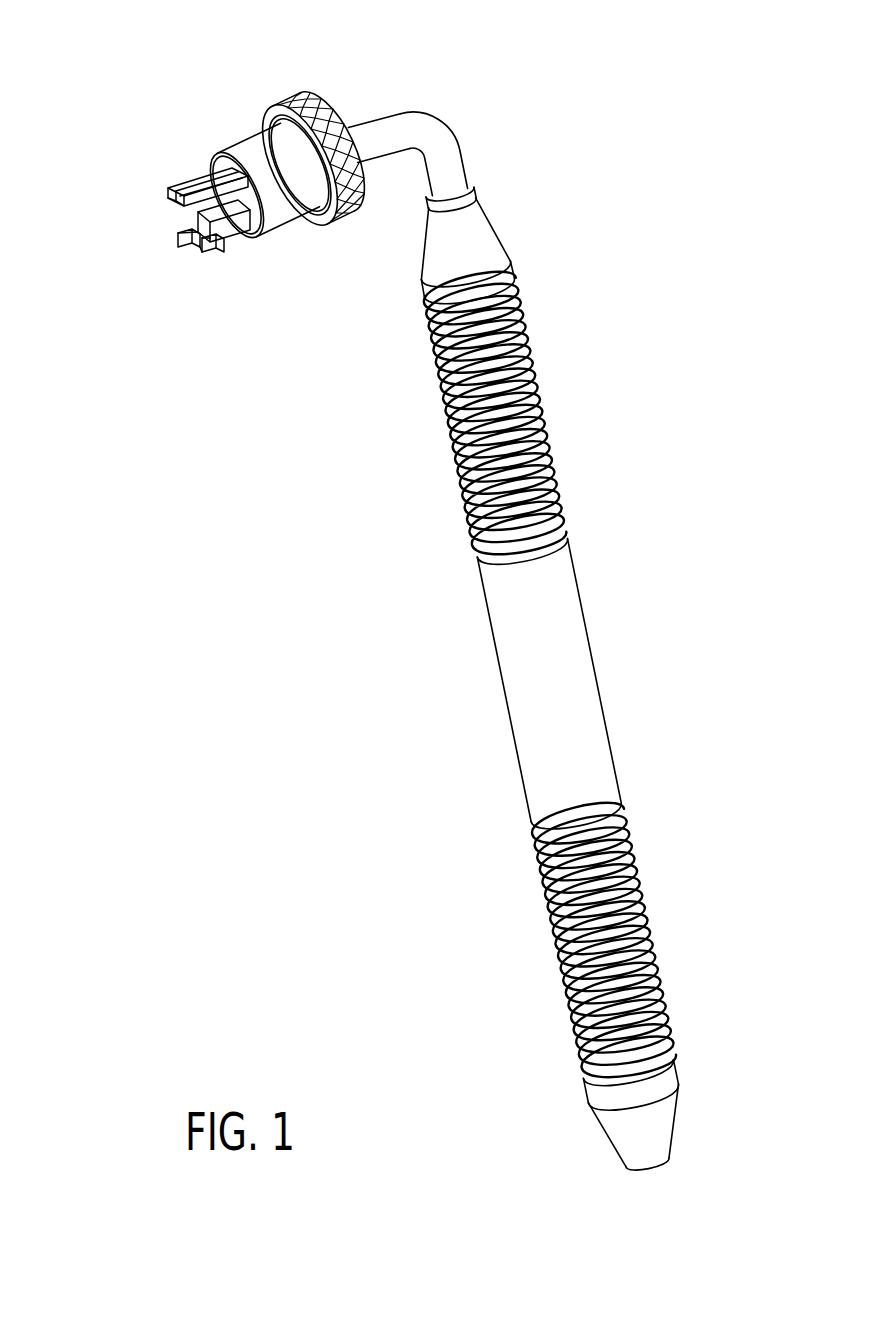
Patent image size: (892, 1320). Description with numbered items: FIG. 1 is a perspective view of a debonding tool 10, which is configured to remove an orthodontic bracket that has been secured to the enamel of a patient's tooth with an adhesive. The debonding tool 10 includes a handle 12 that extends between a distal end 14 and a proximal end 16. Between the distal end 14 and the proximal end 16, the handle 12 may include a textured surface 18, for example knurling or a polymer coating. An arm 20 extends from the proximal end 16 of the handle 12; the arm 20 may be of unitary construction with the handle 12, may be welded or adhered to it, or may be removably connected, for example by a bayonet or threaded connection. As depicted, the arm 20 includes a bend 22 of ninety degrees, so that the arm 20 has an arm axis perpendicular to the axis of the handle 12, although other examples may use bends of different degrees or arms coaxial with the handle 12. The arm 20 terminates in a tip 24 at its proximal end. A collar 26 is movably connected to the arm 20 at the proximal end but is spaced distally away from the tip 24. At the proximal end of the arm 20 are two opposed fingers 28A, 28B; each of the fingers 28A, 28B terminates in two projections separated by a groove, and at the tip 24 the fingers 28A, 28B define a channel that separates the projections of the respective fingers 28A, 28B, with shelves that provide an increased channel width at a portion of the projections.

The debonding tool 10 is at (637, 325).
The handle 12 is at (582, 677).
The distal end 14 is at (692, 1118).
The proximal end 16 is at (510, 217).
The textured surface 18 is at (553, 432).
The arm 20 is at (373, 128).
The bend 22 is at (437, 128).
The tip 24 is at (177, 178).
The collar 26 is at (255, 157).
The first finger 28A is at (207, 176).
The second finger 28B is at (232, 258).